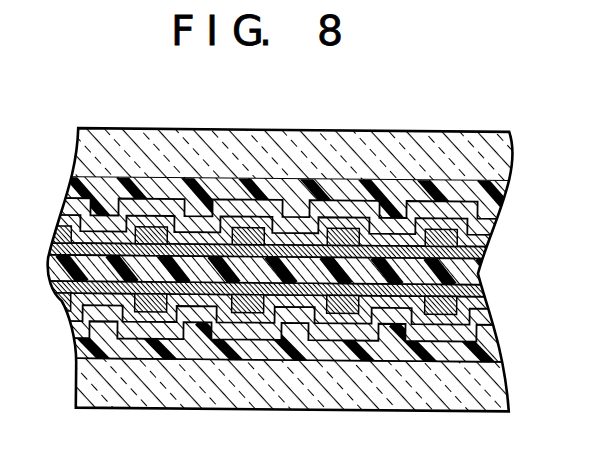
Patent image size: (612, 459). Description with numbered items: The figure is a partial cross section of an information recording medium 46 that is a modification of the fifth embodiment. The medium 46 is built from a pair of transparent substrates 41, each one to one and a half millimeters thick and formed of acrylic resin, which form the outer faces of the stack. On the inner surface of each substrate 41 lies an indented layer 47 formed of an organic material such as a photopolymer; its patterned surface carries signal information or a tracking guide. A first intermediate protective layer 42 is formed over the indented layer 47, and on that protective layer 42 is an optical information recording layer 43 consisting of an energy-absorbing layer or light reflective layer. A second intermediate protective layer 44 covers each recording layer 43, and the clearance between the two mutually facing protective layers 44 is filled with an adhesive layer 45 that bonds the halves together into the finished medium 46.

The transparent substrate 41 is at (503, 157).
The first intermediate protective layer 42 is at (482, 222).
The optical information recording layer 43 is at (482, 240).
The second intermediate protective layer 44 is at (483, 252).
The adhesive layer 45 is at (483, 275).
The information recording medium 46 is at (293, 247).
The indented layer 47 is at (500, 190).